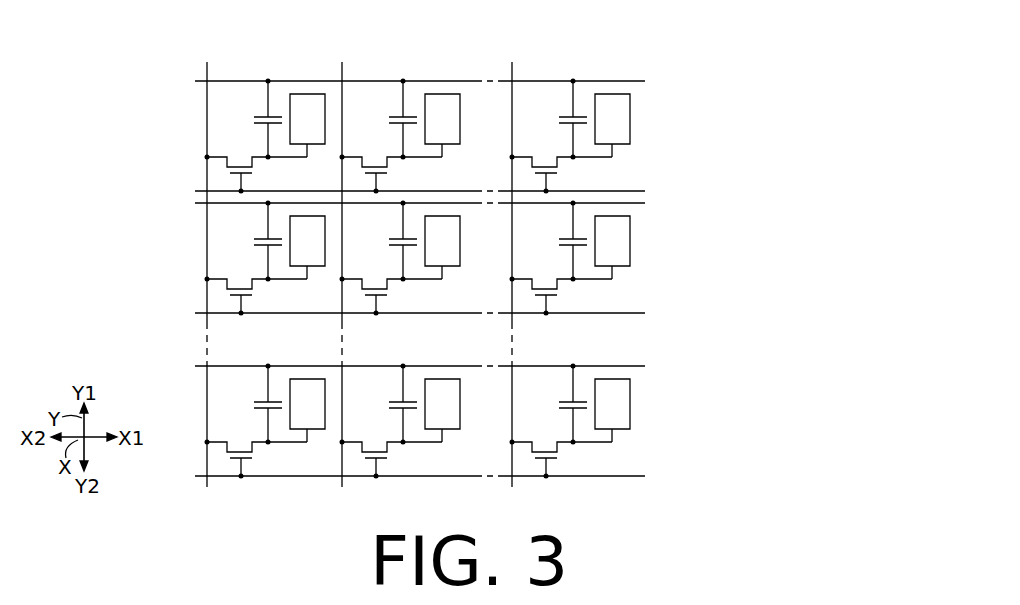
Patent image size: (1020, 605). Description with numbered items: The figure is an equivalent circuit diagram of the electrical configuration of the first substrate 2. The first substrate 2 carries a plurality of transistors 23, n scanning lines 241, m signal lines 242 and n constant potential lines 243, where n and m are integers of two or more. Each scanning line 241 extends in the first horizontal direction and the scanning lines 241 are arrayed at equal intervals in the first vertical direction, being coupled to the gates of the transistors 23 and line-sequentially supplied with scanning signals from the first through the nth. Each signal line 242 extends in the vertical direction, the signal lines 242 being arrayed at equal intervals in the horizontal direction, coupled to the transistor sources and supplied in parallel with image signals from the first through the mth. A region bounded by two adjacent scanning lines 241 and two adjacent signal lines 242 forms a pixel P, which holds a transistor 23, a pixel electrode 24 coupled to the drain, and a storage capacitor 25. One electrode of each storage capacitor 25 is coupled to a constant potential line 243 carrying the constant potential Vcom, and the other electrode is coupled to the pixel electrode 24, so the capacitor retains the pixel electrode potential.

The first substrate 2 is at (655, 53).
The transistor 23 is at (268, 176).
The pixel electrode 24 is at (302, 94).
The storage capacitor 25 is at (252, 121).
The scanning line 241 is at (203, 168).
The signal line 242 is at (209, 74).
The constant potential line 243 is at (200, 81).